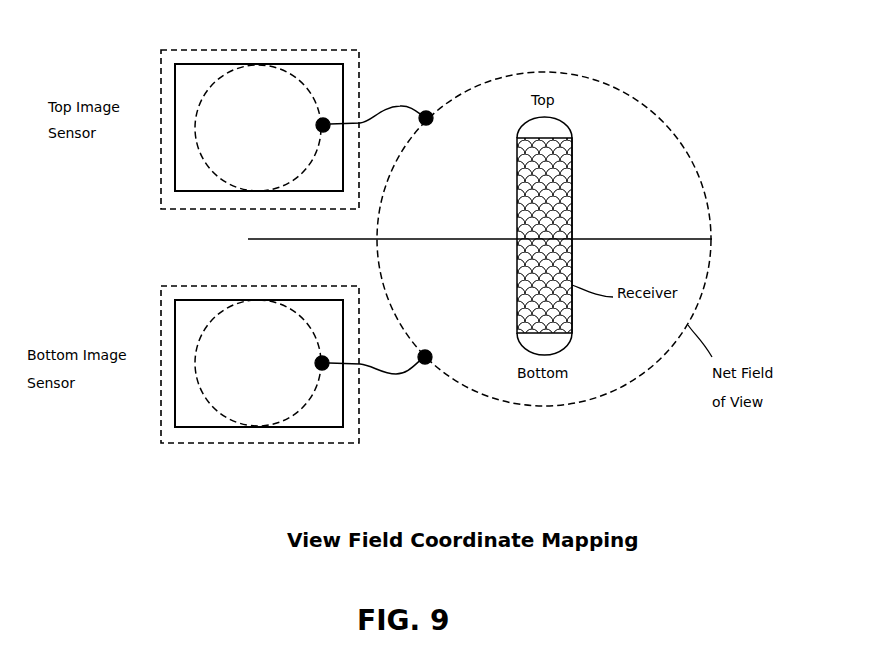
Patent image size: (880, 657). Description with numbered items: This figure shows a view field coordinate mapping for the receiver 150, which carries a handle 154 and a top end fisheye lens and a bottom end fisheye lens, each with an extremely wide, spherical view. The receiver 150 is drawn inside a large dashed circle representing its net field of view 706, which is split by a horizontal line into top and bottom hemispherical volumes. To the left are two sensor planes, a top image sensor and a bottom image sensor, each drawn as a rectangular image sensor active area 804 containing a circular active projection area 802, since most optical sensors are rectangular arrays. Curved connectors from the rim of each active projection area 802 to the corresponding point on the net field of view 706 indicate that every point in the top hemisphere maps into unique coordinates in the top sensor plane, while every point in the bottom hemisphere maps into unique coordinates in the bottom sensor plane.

The image sensor active area 804 is at (285, 63).
The active projection area 802 is at (200, 152).
The receiver 150 is at (556, 182).
The handle 154 is at (574, 222).
The net field of view 706 is at (644, 378).